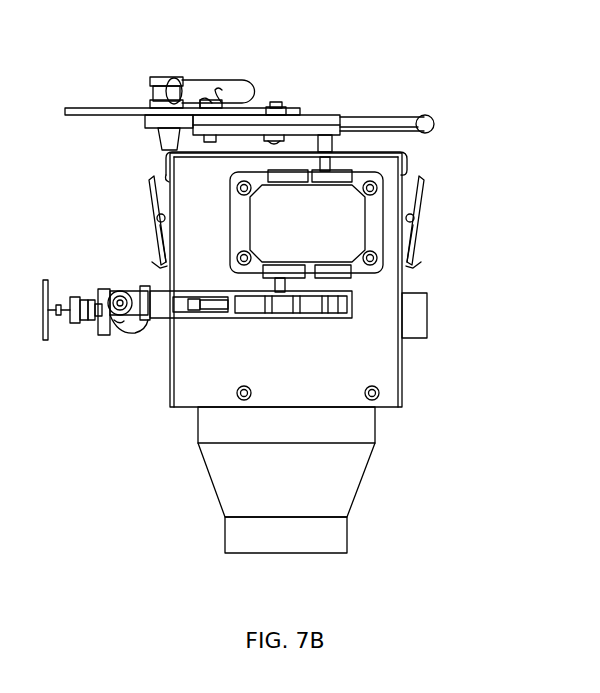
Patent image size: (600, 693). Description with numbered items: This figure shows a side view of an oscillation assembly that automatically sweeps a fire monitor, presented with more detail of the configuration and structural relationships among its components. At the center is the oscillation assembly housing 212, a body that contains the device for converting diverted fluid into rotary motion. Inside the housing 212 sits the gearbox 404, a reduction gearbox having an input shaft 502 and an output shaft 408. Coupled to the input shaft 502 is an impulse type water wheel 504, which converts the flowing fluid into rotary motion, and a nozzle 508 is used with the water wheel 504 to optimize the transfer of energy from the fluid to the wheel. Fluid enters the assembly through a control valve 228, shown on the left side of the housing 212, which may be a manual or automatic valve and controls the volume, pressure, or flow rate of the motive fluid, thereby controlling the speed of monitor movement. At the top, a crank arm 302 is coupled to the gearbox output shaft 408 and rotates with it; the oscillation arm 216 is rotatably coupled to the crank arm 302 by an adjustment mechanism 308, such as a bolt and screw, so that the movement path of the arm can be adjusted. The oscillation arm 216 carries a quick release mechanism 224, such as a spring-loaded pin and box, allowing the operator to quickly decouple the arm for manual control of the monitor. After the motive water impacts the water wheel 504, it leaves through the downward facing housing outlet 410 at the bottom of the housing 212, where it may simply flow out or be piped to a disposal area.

The oscillation assembly housing 212 is at (403, 372).
The oscillation arm 216 is at (87, 109).
The quick release mechanism 224 is at (163, 77).
The control valve 228 is at (117, 332).
The crank arm 302 is at (306, 119).
The adjustment mechanism 308 is at (212, 86).
The gearbox 404 is at (260, 230).
The gearbox output shaft 408 is at (328, 145).
The housing outlet 410 is at (335, 533).
The input shaft 502 is at (276, 286).
The water wheel 504 is at (310, 307).
The nozzle 508 is at (220, 304).